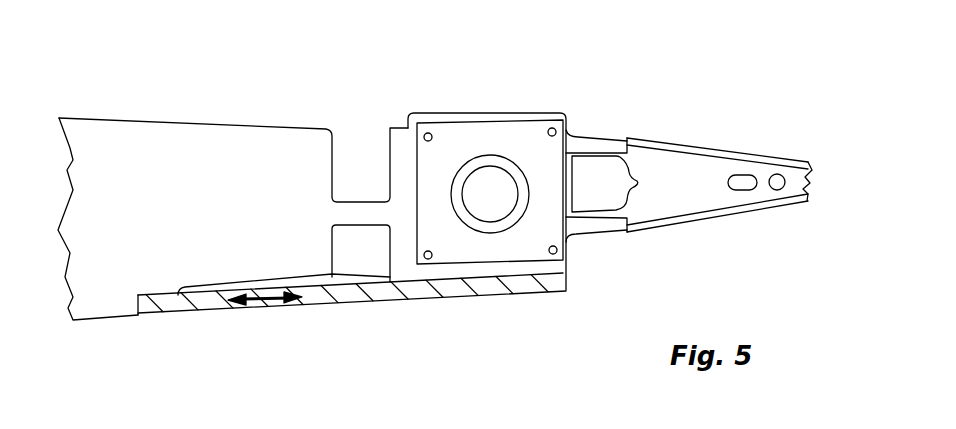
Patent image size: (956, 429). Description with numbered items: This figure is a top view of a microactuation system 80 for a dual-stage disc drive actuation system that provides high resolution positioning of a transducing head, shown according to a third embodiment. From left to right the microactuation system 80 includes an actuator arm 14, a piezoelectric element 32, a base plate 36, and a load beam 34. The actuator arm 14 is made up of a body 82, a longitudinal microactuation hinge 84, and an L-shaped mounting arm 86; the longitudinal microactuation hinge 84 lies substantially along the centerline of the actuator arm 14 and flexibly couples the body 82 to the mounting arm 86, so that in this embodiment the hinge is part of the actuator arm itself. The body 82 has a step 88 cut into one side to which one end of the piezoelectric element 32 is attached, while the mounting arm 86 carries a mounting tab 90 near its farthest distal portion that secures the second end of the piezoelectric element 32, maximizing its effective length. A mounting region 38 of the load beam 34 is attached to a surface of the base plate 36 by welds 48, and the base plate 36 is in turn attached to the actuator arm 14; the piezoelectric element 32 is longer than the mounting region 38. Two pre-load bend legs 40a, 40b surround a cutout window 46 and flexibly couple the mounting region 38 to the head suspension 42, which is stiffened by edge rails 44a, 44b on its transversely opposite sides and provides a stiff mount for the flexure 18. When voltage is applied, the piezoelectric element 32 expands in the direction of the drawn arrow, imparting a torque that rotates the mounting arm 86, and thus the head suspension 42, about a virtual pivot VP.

The actuator arm 14 is at (90, 127).
The microactuation system 80 is at (229, 89).
The body 82 is at (227, 140).
The longitudinal microactuation hinge 84 is at (342, 210).
The virtual pivot VP is at (360, 211).
The base plate 36 is at (477, 118).
The mounting region 38 is at (465, 140).
The load beam 34 is at (583, 111).
The pre-load bend leg 40a is at (595, 145).
The edge rail 44a is at (693, 143).
The flexure 18 is at (807, 160).
The head suspension 42 is at (733, 162).
The edge rail 44b is at (713, 213).
The pre-load bend leg 40b is at (607, 218).
The cutout window 46 is at (590, 193).
The mounting arm 86 is at (460, 273).
The mounting tab 90 is at (564, 290).
The welds 48 is at (417, 263).
The piezoelectric element 32 is at (153, 308).
The step 88 is at (170, 290).